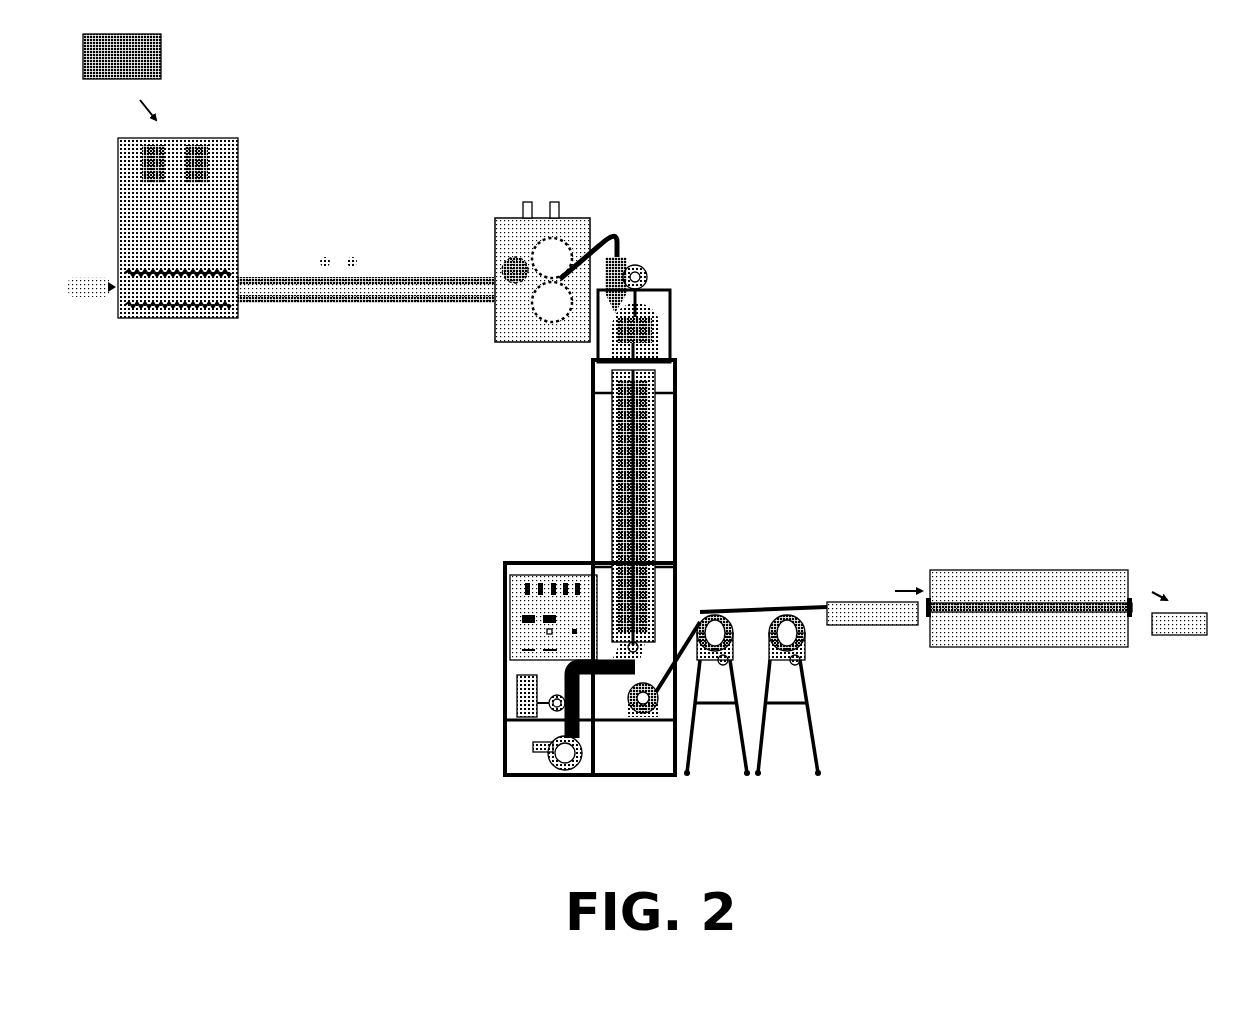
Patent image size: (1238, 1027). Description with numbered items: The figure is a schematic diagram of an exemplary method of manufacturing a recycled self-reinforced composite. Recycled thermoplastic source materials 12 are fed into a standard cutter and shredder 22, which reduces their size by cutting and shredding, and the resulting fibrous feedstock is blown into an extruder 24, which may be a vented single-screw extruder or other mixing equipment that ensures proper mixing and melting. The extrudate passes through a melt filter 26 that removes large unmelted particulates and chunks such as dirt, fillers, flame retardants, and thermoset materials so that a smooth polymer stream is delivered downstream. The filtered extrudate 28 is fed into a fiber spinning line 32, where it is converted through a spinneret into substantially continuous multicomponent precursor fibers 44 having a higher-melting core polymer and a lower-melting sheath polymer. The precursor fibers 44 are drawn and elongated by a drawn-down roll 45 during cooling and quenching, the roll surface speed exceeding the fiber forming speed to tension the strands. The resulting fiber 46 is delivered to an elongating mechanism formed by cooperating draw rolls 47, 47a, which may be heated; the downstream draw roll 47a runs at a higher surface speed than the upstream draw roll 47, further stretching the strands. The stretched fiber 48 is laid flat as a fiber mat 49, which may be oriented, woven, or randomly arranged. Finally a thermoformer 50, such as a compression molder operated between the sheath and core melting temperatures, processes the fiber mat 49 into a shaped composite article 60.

The source materials 12 is at (145, 80).
The cutter and shredder 22 is at (160, 318).
The extruder 24 is at (318, 303).
The melt filter 26 is at (505, 212).
The filtered extrudate 28 is at (620, 237).
The fiber spinning line 32 is at (673, 323).
The precursor fibers 44 is at (632, 425).
The drawn-down roll 45 is at (638, 720).
The resulting fiber 46 is at (683, 663).
The draw roll 47 is at (737, 703).
The draw roll 47a is at (807, 670).
The stretched fiber 48 is at (807, 608).
The fiber mat 49 is at (883, 602).
The thermoformer 50 is at (1080, 647).
The shaped composite article 60 is at (1170, 635).